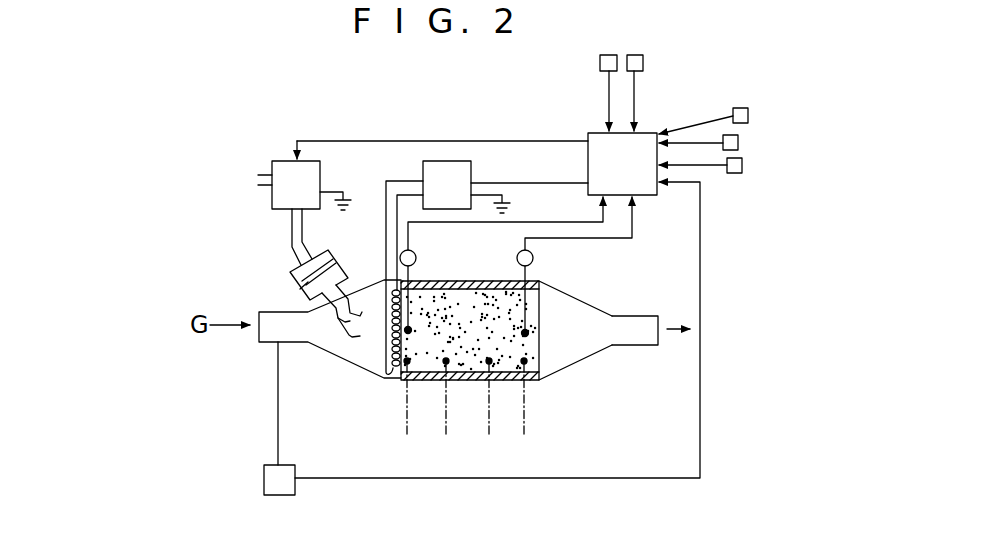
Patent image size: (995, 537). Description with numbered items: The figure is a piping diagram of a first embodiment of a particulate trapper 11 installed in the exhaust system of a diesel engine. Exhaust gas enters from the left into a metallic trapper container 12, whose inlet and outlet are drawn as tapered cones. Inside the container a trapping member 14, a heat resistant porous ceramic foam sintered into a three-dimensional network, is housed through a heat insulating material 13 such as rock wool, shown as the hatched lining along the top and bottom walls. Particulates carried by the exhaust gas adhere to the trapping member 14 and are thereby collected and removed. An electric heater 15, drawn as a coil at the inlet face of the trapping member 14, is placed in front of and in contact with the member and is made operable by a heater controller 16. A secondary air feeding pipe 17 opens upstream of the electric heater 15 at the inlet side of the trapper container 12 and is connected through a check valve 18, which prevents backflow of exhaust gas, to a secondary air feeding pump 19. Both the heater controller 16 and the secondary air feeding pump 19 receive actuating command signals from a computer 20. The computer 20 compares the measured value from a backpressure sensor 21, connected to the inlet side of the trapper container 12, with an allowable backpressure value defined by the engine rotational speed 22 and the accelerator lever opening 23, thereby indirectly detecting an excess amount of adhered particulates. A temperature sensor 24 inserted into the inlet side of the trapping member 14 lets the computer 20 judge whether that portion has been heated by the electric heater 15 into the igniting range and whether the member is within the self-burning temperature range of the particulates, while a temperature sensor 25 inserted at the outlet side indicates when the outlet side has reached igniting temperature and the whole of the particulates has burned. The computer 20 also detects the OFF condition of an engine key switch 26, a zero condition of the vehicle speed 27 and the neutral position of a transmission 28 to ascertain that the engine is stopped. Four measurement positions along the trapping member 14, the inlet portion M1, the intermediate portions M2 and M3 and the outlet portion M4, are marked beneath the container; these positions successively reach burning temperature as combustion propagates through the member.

The trapper 11 is at (602, 354).
The trapper container 12 is at (573, 369).
The heat insulating material 13 is at (465, 381).
The trapping member 14 is at (531, 348).
The electric heater 15 is at (394, 372).
The heater controller 16 is at (471, 168).
The secondary air feeding pipe 17 is at (345, 351).
The check valve 18 is at (332, 259).
The secondary air feeding pump 19 is at (320, 168).
The computer 20 is at (588, 160).
The backpressure sensor 21 is at (264, 482).
The rotational speed 22 is at (606, 55).
The opening 23 is at (636, 55).
The temperature sensor 24 is at (416, 258).
The temperature sensor 25 is at (533, 258).
The engine key switch 26 is at (742, 167).
The vehicle speed 27 is at (738, 143).
The transmission 28 is at (748, 114).
The inlet portion M1 is at (411, 410).
The intermediate portion M2 is at (447, 410).
The intermediate portion M3 is at (491, 410).
The outlet portion M4 is at (530, 410).